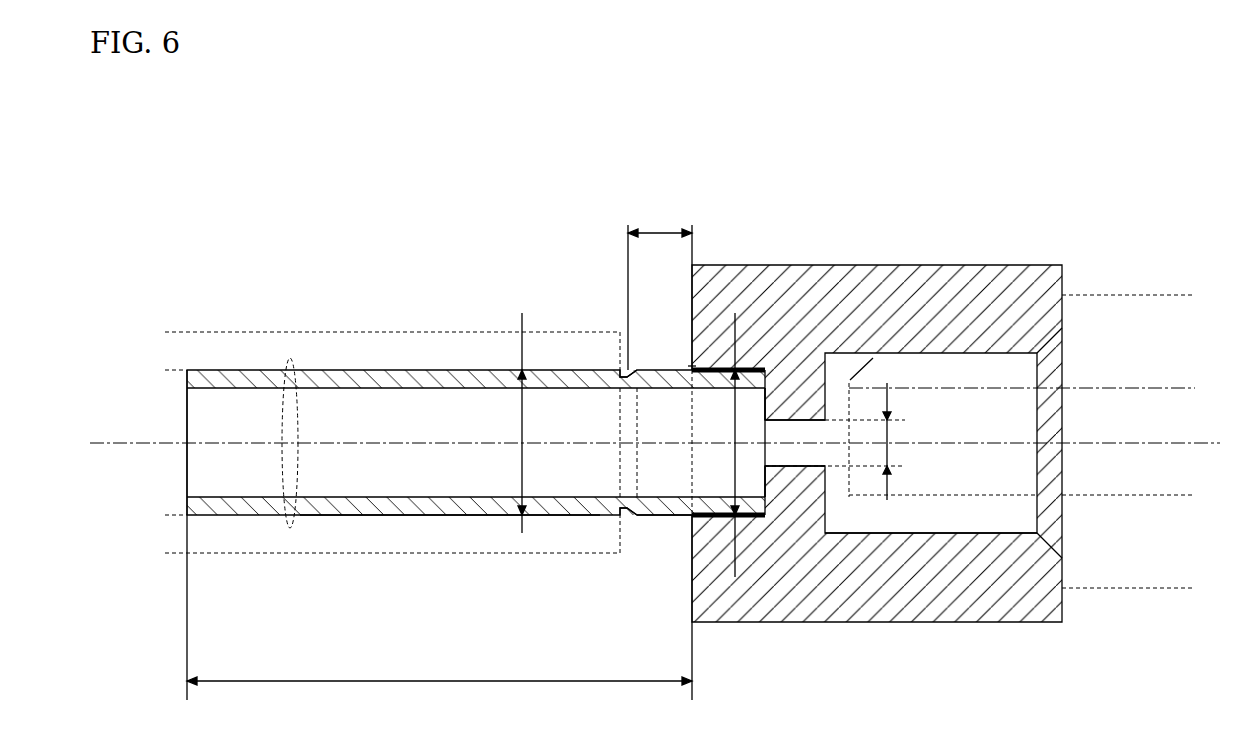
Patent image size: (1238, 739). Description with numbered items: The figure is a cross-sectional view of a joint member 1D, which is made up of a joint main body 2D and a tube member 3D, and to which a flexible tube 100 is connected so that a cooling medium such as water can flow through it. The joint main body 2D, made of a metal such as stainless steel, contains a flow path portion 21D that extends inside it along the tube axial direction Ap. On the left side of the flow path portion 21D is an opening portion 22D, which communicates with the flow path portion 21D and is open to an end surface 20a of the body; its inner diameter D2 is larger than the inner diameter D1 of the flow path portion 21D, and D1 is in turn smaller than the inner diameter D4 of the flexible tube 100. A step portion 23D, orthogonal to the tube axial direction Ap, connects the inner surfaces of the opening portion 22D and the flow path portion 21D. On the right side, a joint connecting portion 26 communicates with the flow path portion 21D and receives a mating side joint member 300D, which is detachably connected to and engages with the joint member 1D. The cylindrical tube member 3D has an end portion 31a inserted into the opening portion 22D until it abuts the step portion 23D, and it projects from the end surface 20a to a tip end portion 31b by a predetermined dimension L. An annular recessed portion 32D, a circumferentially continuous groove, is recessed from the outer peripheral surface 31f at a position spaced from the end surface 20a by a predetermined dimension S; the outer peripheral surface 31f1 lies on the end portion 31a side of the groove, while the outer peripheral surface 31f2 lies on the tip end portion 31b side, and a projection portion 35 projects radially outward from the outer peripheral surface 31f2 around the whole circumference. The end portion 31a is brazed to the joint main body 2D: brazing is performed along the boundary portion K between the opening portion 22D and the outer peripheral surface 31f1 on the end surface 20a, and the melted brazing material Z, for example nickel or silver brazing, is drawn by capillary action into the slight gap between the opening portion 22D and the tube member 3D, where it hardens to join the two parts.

The mating side joint member 300D is at (1113, 293).
The joint member 1D is at (722, 232).
The joint main body 2D is at (995, 260).
The tube member 3D is at (397, 368).
The flexible tube 100 is at (335, 332).
The projection portion 35 is at (287, 362).
The end surface 20a is at (690, 284).
The end portion 31a is at (720, 368).
The tip end portion 31b is at (190, 518).
The outer peripheral surface 31f is at (465, 515).
The outer peripheral surface 31f1 is at (652, 518).
The outer peripheral surface 31f2 is at (370, 515).
The annular recessed portion 32D is at (620, 567).
The opening portion 22D is at (672, 520).
The step portion 23D is at (760, 488).
The flow path portion 21D is at (793, 462).
The joint connecting portion 26 is at (940, 533).
The tube axial direction Ap is at (1165, 440).
The boundary portion K is at (690, 365).
The predetermined dimension S is at (660, 282).
The brazing material Z is at (720, 522).
The predetermined dimension L is at (439, 616).
The inner diameter D1 is at (890, 418).
The inner diameter D2 is at (740, 407).
The inner diameter D4 is at (487, 370).